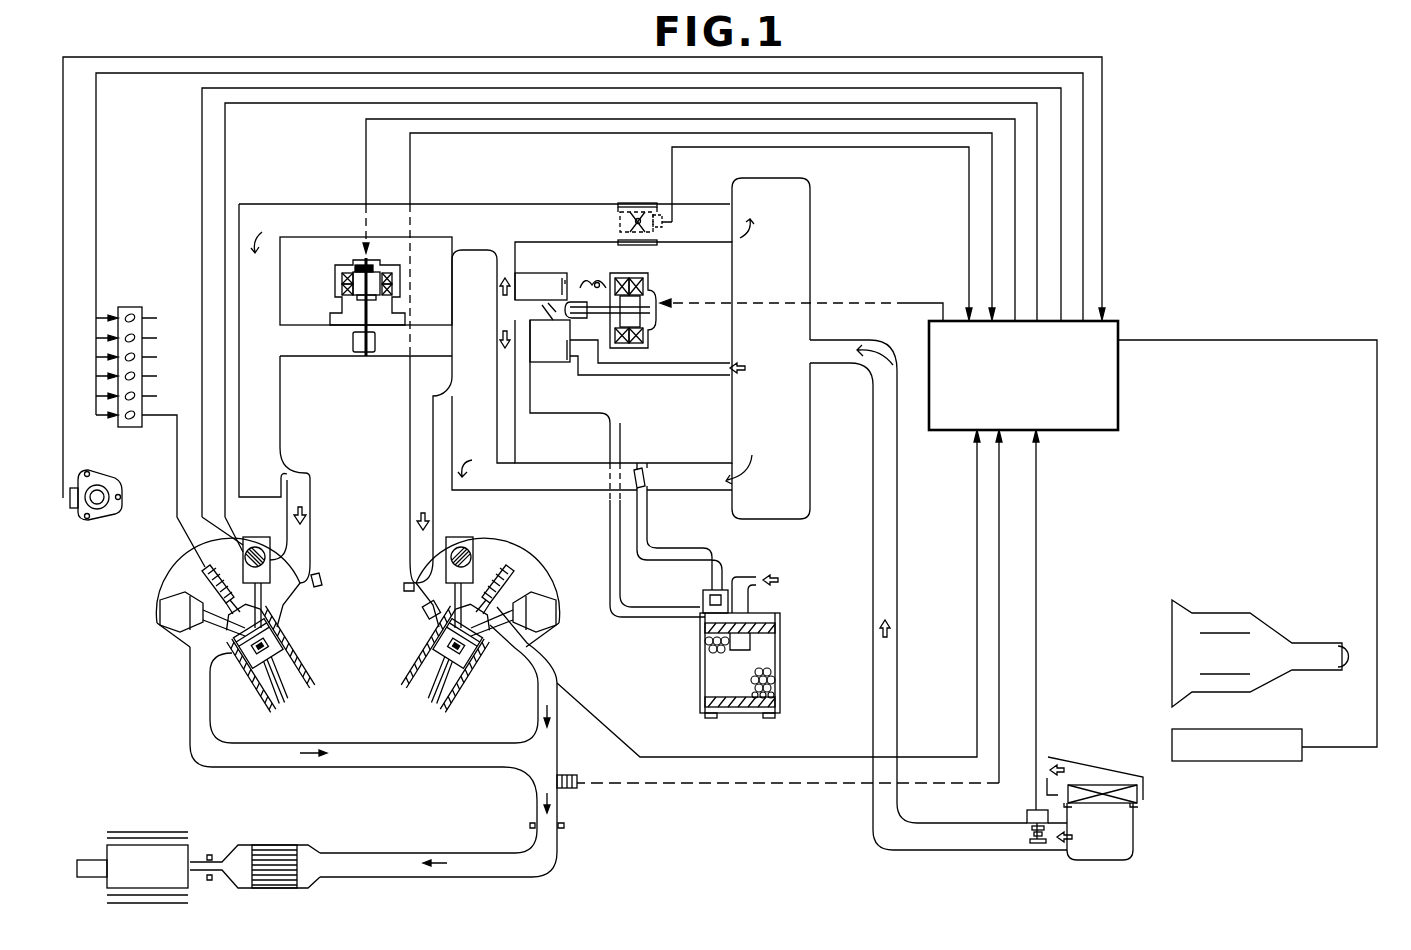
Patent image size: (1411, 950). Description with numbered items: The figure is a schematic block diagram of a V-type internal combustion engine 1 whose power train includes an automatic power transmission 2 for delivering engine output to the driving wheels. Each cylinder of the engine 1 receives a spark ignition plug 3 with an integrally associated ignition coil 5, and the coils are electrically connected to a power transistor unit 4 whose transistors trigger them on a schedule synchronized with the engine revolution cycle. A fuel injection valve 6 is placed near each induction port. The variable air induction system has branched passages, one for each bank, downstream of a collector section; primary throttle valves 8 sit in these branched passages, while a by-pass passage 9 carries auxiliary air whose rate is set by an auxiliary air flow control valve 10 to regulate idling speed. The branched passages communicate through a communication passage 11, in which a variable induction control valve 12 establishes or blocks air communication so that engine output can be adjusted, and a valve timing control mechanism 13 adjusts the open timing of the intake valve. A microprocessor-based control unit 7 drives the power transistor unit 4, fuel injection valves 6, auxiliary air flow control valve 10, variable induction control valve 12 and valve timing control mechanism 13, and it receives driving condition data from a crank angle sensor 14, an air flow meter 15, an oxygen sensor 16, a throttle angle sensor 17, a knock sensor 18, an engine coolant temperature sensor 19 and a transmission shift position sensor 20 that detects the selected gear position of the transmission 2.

The internal combustion engine 1 is at (358, 652).
The automatic power transmission 2 is at (1253, 627).
The spark ignition plug 3 is at (203, 640).
The power transistor unit 4 is at (130, 317).
The ignition coil 5 is at (206, 578).
The fuel injection valve 6 is at (315, 578).
The control unit 7 is at (1110, 320).
The primary throttle valve 8 is at (643, 210).
The by-pass passage 9 is at (675, 367).
The auxiliary air flow control valve 10 is at (647, 292).
The communication passage 11 is at (320, 360).
The variable induction control valve 12 is at (333, 280).
The valve timing control mechanism 13 is at (262, 548).
The crank angle sensor 14 is at (78, 513).
The air flow meter 15 is at (1032, 828).
The oxygen sensor 16 is at (577, 787).
The throttle angle sensor 17 is at (620, 218).
The knock sensor 18 is at (500, 653).
The engine coolant temperature sensor 19 is at (425, 608).
The transmission shift position sensor 20 is at (1290, 762).